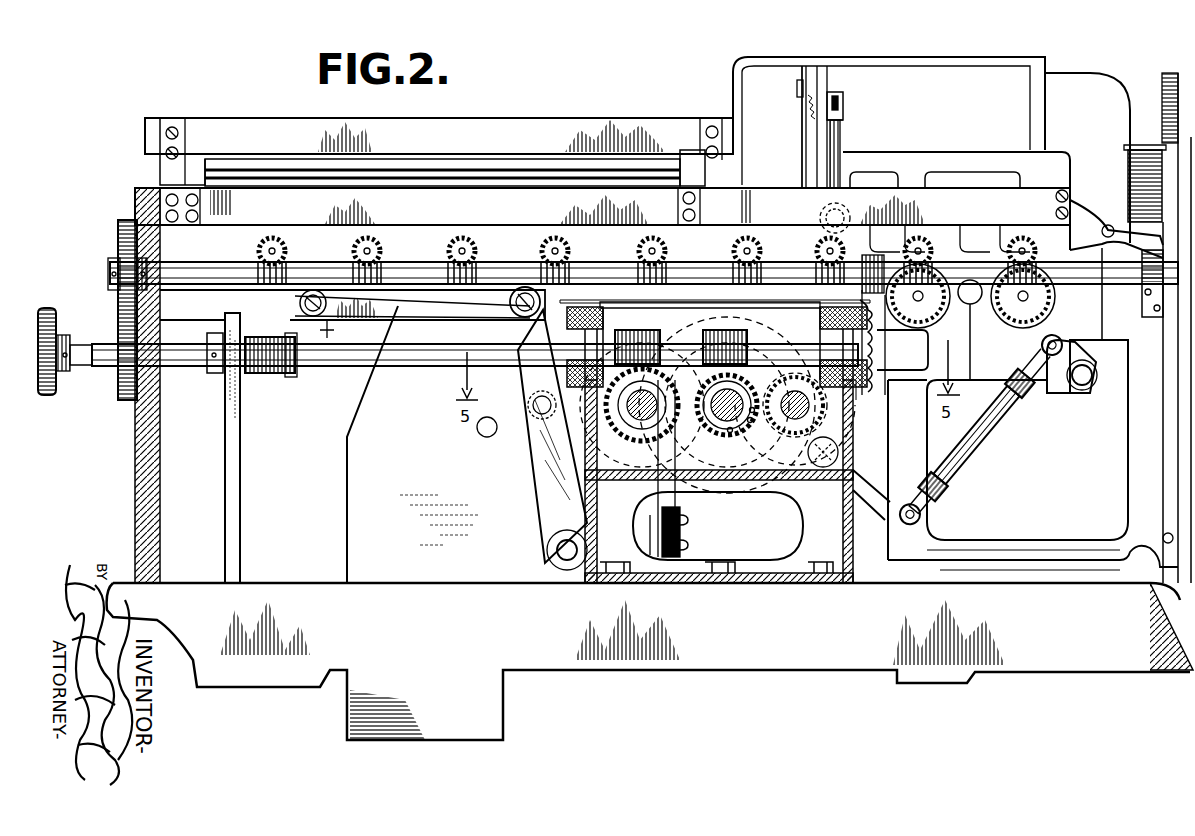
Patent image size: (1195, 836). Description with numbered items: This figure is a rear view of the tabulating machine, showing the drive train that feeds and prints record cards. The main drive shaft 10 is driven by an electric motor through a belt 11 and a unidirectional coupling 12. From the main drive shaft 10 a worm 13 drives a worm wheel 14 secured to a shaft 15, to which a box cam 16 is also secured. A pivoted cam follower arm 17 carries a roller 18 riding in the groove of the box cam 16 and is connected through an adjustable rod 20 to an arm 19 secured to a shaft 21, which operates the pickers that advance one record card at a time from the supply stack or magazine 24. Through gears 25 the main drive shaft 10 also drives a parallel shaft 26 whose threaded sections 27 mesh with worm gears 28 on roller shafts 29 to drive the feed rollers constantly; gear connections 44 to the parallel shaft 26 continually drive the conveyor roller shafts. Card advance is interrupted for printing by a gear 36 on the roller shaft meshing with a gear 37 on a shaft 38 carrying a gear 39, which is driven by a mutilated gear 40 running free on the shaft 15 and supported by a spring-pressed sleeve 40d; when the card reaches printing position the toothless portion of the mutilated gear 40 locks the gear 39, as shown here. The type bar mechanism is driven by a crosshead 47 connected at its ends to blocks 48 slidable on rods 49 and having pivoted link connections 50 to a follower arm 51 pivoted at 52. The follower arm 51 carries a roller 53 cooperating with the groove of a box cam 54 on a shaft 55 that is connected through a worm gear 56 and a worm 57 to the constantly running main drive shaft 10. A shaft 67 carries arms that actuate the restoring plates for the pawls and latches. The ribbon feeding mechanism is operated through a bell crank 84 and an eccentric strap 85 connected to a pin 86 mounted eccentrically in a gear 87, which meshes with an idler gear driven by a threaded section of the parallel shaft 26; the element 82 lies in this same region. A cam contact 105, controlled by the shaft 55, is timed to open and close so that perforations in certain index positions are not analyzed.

The main drive shaft 10 is at (318, 368).
The belt 11 is at (240, 465).
The unidirectional coupling 12 is at (265, 372).
The worm 13 is at (738, 330).
The worm wheel 14 is at (688, 375).
The shaft 15 is at (745, 380).
The box cam 16 is at (805, 480).
The cam follower arm 17 is at (868, 486).
The roller 18 is at (718, 526).
The arm 19 is at (1058, 370).
The adjustable rod 20 is at (972, 438).
The shaft 21 is at (1093, 382).
The supply stack or magazine 24 is at (1142, 148).
The gears 25 is at (118, 320).
The parallel shaft 26 is at (186, 276).
The threaded sections 27 is at (1010, 255).
The worm gears 28 is at (1000, 312).
The roller shafts 29 is at (925, 300).
The gear 36 is at (884, 352).
The gear 37 is at (850, 405).
The shaft 38 is at (850, 430).
The gear 39 is at (818, 470).
The mutilated gear 40 is at (750, 420).
The sleeve 40d is at (800, 440).
The gear connections 44 is at (355, 252).
The crosshead 47 is at (338, 331).
The blocks 48 is at (290, 300).
The rods 49 is at (207, 312).
The link connections 50 is at (398, 310).
The follower arm 51 is at (540, 505).
The pivot 52 is at (556, 553).
The roller 53 is at (537, 420).
The box cam 54 is at (553, 322).
The shaft 55 is at (625, 432).
The worm gear 56 is at (640, 448).
The worm 57 is at (640, 330).
The shaft 67 is at (478, 434).
The guide 82 is at (805, 142).
The bell crank 84 is at (843, 98).
The eccentric strap 85 is at (841, 143).
The pin 86 is at (845, 214).
The gear 87 is at (848, 276).
The cam contact 105 is at (672, 503).